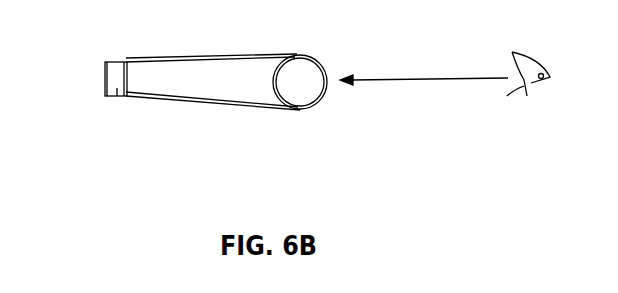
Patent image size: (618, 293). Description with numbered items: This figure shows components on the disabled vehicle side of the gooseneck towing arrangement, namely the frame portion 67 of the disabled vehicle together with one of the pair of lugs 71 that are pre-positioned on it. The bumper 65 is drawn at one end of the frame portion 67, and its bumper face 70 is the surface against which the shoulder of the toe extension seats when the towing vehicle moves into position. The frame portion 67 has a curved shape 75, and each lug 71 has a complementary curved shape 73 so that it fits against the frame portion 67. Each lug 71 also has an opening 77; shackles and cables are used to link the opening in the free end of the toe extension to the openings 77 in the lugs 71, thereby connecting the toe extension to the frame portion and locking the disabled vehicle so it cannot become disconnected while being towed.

The bumper 65 is at (117, 97).
The frame portion 67 is at (217, 85).
The bumper face 70 is at (105, 71).
The lug 71 is at (557, 97).
The curved shape 73 is at (520, 85).
The curved shape 75 is at (323, 93).
The opening 77 is at (546, 76).